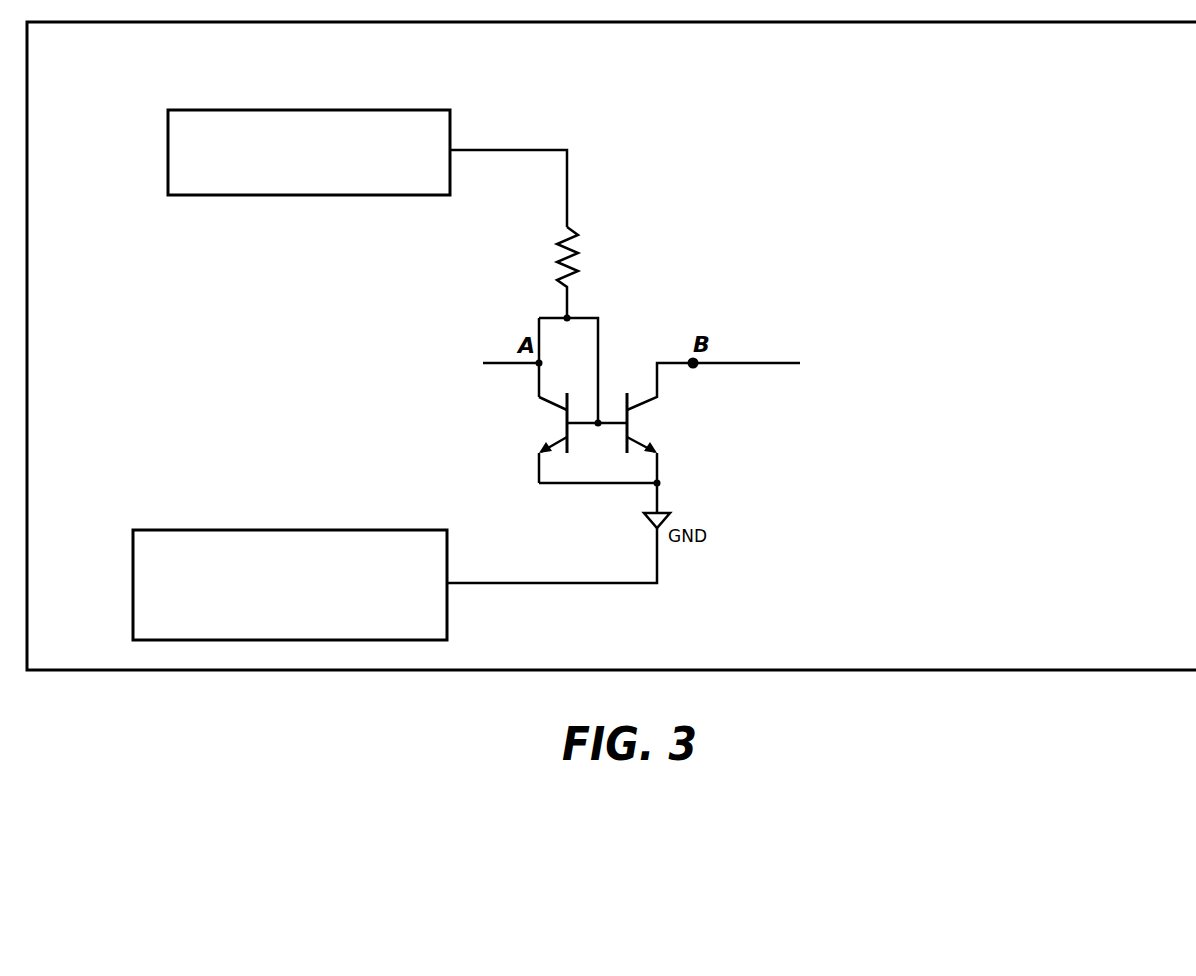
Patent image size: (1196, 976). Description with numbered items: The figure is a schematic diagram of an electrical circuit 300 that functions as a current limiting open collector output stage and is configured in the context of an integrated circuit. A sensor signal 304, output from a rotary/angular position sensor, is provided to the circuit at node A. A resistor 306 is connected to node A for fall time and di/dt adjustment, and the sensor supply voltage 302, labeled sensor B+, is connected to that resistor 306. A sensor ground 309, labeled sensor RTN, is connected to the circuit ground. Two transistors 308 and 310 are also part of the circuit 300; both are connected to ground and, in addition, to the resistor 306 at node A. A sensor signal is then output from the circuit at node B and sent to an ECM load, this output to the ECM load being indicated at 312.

The electrical circuit 300 is at (1152, 73).
The sensor supply voltage 302 is at (232, 110).
The sensor signal 304 is at (393, 349).
The resistor 306 is at (592, 272).
The transistor 308 is at (550, 430).
The sensor ground 309 is at (286, 530).
The transistor 310 is at (647, 427).
The sensor signal output to ECM load 312 is at (900, 300).